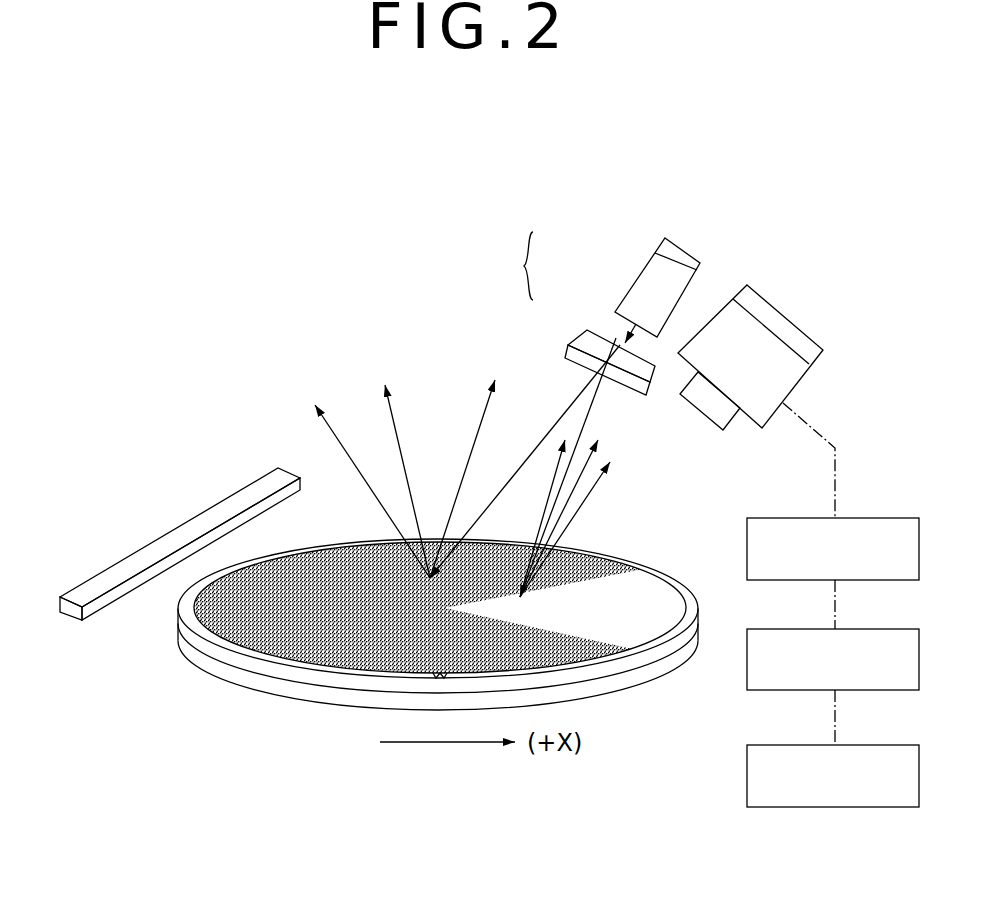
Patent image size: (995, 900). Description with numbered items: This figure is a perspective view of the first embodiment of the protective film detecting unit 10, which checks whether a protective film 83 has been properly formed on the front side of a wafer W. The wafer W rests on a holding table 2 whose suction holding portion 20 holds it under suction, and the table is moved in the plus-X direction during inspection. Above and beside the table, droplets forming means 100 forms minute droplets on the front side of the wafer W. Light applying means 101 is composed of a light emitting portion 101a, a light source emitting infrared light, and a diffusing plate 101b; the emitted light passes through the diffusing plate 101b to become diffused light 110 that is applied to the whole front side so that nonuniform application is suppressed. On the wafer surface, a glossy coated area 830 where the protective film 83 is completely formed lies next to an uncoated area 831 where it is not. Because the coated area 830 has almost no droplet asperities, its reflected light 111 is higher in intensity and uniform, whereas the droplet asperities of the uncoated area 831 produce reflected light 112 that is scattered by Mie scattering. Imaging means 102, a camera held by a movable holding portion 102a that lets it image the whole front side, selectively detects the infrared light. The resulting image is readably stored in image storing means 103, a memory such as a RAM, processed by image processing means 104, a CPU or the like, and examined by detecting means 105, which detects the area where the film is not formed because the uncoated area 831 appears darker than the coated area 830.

The protective film detecting unit 10 is at (222, 320).
The droplets forming means 100 is at (183, 535).
The holding table 2 is at (213, 668).
The suction holding portion 20 is at (200, 640).
The wafer W is at (292, 666).
The protective film 83 is at (337, 548).
The coated area 830 is at (440, 641).
The uncoated area 831 is at (571, 614).
The light applying means 101 is at (589, 311).
The light emitting portion 101a is at (642, 290).
The diffusing plate 101b is at (598, 345).
The diffused light 110 is at (582, 428).
The reflected light 111 is at (483, 417).
The reflected light 112 is at (577, 483).
The imaging means 102 is at (715, 408).
The holding portion 102a is at (778, 325).
The image storing means 103 is at (853, 518).
The image processing means 104 is at (853, 629).
The detecting means 105 is at (853, 745).